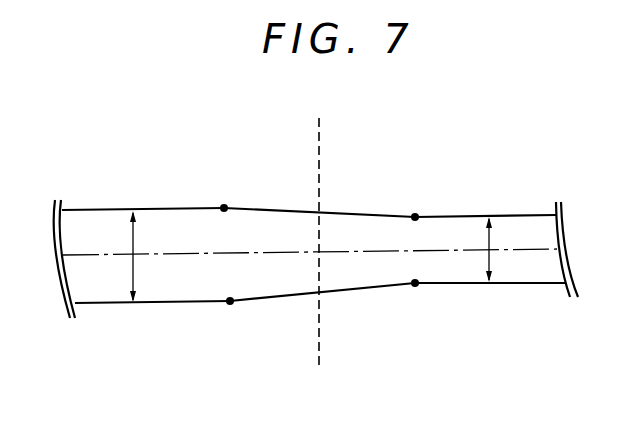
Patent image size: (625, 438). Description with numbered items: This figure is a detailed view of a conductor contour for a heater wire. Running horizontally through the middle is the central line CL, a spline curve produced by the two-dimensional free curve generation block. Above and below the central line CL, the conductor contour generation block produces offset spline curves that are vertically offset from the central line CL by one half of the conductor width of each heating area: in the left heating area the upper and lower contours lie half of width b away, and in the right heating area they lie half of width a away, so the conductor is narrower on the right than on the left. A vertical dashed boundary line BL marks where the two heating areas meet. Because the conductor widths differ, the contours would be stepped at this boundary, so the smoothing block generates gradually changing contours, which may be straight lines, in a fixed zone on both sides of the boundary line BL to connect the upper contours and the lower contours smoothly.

The boundary line BL is at (313, 230).
The central line CL is at (285, 253).